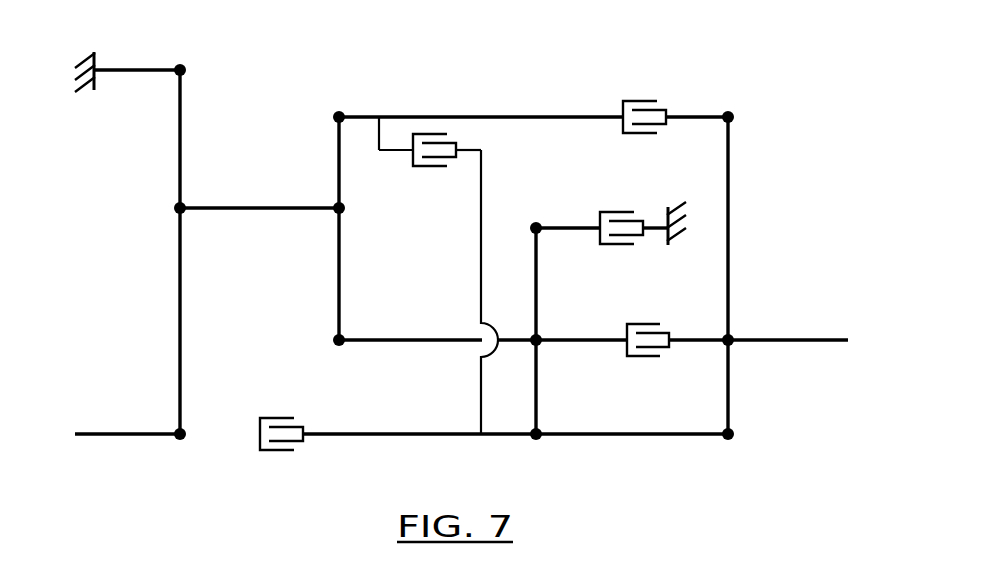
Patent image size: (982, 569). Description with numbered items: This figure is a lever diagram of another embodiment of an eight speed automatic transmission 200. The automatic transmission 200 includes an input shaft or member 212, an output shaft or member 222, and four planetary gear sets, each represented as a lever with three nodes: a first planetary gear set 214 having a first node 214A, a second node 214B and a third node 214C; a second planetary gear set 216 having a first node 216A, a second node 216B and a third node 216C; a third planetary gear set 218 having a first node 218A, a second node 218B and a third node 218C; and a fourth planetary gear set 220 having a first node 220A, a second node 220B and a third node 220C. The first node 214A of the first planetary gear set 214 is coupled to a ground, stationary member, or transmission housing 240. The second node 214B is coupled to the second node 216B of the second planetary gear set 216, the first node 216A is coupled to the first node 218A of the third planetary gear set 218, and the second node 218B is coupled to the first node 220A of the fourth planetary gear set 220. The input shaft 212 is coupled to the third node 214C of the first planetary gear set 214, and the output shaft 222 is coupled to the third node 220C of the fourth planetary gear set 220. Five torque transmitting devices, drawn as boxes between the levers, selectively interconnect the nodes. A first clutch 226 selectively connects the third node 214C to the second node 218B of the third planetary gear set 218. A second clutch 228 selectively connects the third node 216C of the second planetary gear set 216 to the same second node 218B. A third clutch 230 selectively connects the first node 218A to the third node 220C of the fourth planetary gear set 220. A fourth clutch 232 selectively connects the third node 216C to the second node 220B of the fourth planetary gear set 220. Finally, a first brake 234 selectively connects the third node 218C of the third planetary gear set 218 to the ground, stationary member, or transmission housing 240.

The eight speed automatic transmission 200 is at (771, 82).
The input shaft 212 is at (123, 434).
The first planetary gear set 214 is at (177, 443).
The first node 214A is at (185, 67).
The second node 214B is at (185, 205).
The third node 214C is at (185, 431).
The second planetary gear set 216 is at (342, 353).
The first node 216A is at (336, 338).
The second node 216B is at (343, 212).
The third node 216C is at (343, 113).
The third planetary gear set 218 is at (554, 456).
The first node 218A is at (540, 343).
The second node 218B is at (533, 440).
The third node 218C is at (541, 222).
The fourth planetary gear set 220 is at (734, 448).
The first node 220A is at (733, 428).
The second node 220B is at (733, 120).
The third node 220C is at (731, 336).
The output shaft 222 is at (790, 341).
The first clutch 226 is at (277, 450).
The second clutch 228 is at (430, 167).
The third clutch 230 is at (643, 325).
The fourth clutch 232 is at (640, 101).
The first brake 234 is at (617, 212).
The transmission housing 240 is at (100, 74).